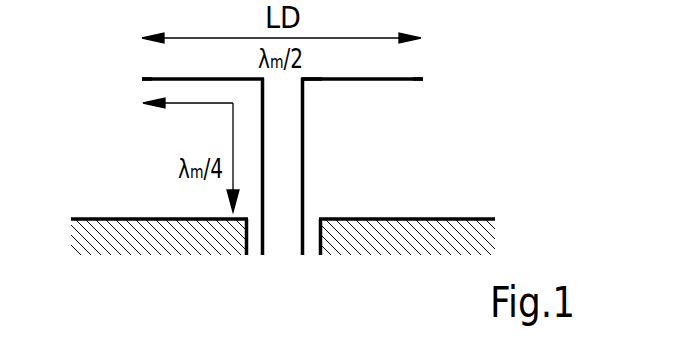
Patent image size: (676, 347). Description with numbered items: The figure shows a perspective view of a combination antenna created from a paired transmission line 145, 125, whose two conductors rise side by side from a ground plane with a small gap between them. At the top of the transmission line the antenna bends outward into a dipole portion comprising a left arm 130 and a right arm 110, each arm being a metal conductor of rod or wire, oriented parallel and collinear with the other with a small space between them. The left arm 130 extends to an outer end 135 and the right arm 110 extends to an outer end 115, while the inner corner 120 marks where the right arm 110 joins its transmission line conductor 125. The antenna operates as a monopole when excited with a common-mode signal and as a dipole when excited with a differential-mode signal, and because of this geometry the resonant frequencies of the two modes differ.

The right arm 110 is at (371, 78).
The right plate outer end 115 is at (423, 80).
The right plate inner corner 120 is at (320, 81).
The paired transmission line conductor 125 is at (305, 170).
The left arm 130 is at (200, 78).
The left plate outer end 135 is at (148, 82).
The paired transmission line conductor 145 is at (262, 151).